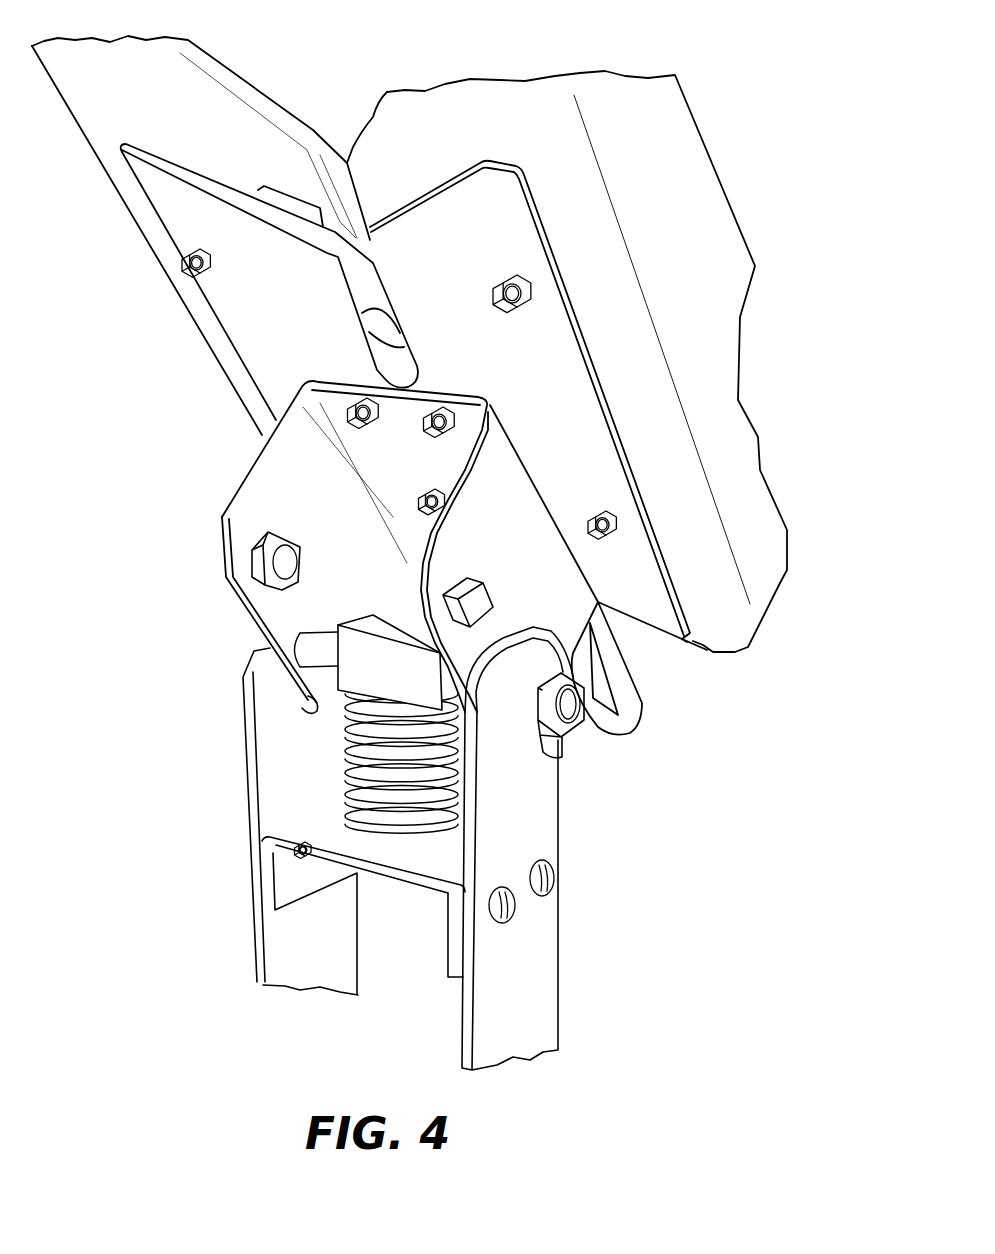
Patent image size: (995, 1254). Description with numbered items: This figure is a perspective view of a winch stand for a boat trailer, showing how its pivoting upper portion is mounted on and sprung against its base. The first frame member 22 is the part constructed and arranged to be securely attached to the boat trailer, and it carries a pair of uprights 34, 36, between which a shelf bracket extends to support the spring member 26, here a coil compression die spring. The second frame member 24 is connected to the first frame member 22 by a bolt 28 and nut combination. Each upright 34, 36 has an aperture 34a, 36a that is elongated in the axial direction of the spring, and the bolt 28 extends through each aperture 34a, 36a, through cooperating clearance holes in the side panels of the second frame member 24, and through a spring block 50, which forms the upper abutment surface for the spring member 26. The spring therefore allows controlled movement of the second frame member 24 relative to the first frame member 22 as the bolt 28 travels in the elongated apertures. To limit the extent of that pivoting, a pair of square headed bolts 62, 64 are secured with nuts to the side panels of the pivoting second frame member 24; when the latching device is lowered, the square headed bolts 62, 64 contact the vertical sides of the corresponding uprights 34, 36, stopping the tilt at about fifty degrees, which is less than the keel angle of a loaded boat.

The first frame member 22 is at (413, 848).
The second frame member 24 is at (253, 583).
The spring member 26 is at (368, 767).
The bolt 28 is at (317, 707).
The upright 34 is at (293, 807).
The aperture 34a is at (548, 745).
The upright 36 is at (540, 825).
The aperture 36a is at (307, 705).
The spring block 50 is at (355, 655).
The square headed bolt 62 is at (477, 600).
The square headed bolt 64 is at (220, 553).